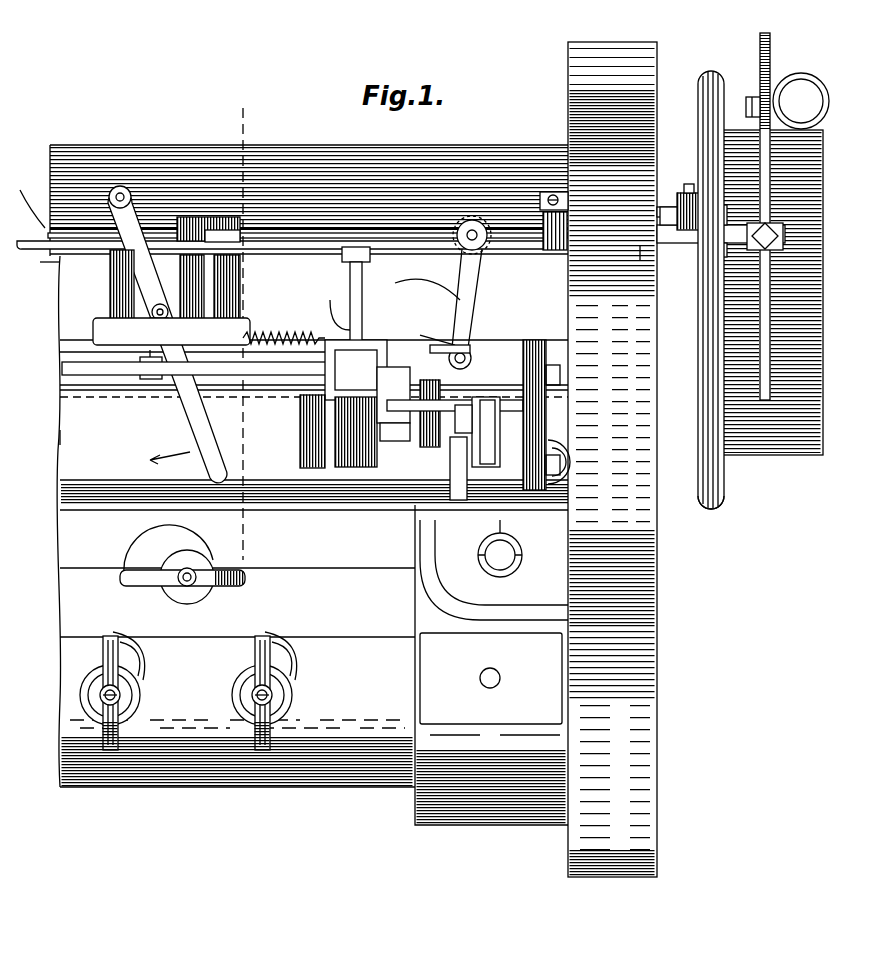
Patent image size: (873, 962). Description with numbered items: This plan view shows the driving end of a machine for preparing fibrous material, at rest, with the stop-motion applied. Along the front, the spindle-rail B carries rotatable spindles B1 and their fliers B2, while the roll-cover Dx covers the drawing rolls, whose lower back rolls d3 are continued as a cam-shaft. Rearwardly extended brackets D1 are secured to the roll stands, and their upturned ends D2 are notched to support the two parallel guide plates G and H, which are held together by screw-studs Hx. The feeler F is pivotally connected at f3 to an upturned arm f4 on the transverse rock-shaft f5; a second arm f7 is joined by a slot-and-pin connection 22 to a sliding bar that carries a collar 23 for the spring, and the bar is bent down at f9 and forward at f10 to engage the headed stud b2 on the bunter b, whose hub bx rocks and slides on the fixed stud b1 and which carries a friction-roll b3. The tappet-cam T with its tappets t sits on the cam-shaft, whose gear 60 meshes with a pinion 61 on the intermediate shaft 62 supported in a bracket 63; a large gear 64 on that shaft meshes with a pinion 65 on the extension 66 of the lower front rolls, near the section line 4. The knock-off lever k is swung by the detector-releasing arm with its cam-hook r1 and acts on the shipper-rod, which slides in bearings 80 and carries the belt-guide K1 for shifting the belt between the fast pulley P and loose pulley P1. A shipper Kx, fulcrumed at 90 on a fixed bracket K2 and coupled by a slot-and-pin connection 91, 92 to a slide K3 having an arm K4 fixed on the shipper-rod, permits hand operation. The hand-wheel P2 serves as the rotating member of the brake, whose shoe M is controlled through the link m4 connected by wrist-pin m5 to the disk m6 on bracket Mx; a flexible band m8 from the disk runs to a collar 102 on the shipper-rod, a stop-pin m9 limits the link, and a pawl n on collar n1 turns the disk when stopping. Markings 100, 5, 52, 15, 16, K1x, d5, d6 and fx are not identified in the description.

The fulcrum 90 is at (122, 190).
The slot of slot-and-pin connection 91 is at (152, 310).
The pin of slot-and-pin connection 92 is at (152, 322).
The direction arrow 100 is at (170, 466).
The collar 102 is at (547, 220).
The bearings 80 is at (217, 230).
The section line 5 is at (240, 324).
The collar 23 is at (269, 346).
The shaft 52 is at (196, 358).
The section line 4 is at (432, 450).
The pin 15 is at (488, 342).
The pin 16 is at (416, 279).
The pin of slot-and-pin connection 22 is at (360, 336).
The gear 60 is at (458, 500).
The pinion 61 is at (395, 507).
The intermediate shaft 62 is at (492, 405).
The bracket 63 is at (493, 432).
The large gear 64 is at (550, 362).
The pinion 65 is at (560, 470).
The extension of lower front rolls 66 is at (400, 440).
The spindle-rail B is at (188, 636).
The rotatable spindles B1 is at (195, 568).
The fliers B2 is at (112, 636).
The brackets D1 is at (248, 300).
The upturned ends D2 is at (300, 237).
The roll-cover Dx is at (60, 433).
The feeler F is at (325, 250).
The guide plate G is at (32, 200).
The guide plate H is at (44, 262).
The screw-studs Hx is at (680, 578).
The belt-guide K1 is at (800, 74).
The connecting rod K1x is at (462, 345).
The fixed bracket K2 is at (108, 270).
The slide K3 is at (205, 305).
The arm K4 is at (192, 263).
The shipper Kx is at (540, 302).
The knock-off lever k is at (478, 280).
The shoe M is at (785, 245).
The bracket Mx is at (645, 243).
The fast pulley P is at (748, 450).
The loose pulley P1 is at (798, 455).
The hand-wheel P2 is at (712, 514).
The tappet-cam T is at (345, 402).
The bunter b is at (335, 402).
The fixed stud b1 is at (470, 368).
The headed stud b2 is at (352, 405).
The friction-roll b3 is at (385, 430).
The hub bx is at (415, 345).
The lower back rolls d3 is at (345, 430).
The bracket d5 is at (334, 306).
The bracket d6 is at (345, 335).
The pivot connection f3 is at (272, 325).
The upturned arm f4 is at (357, 255).
The rock-shaft f5 is at (368, 292).
The second upturned arm f7 is at (372, 285).
The downward bend of bar f9 is at (392, 315).
The forward portion of bar f10 is at (480, 330).
The rod fx is at (330, 372).
The link m4 is at (717, 193).
The wrist-pin m5 is at (689, 184).
The disk m6 is at (662, 210).
The flexible band m8 is at (576, 204).
The stop-pin m9 is at (685, 192).
The pawl n is at (722, 212).
The collar n1 is at (724, 252).
The cam-hook r1 is at (333, 388).
The tappets t is at (382, 444).